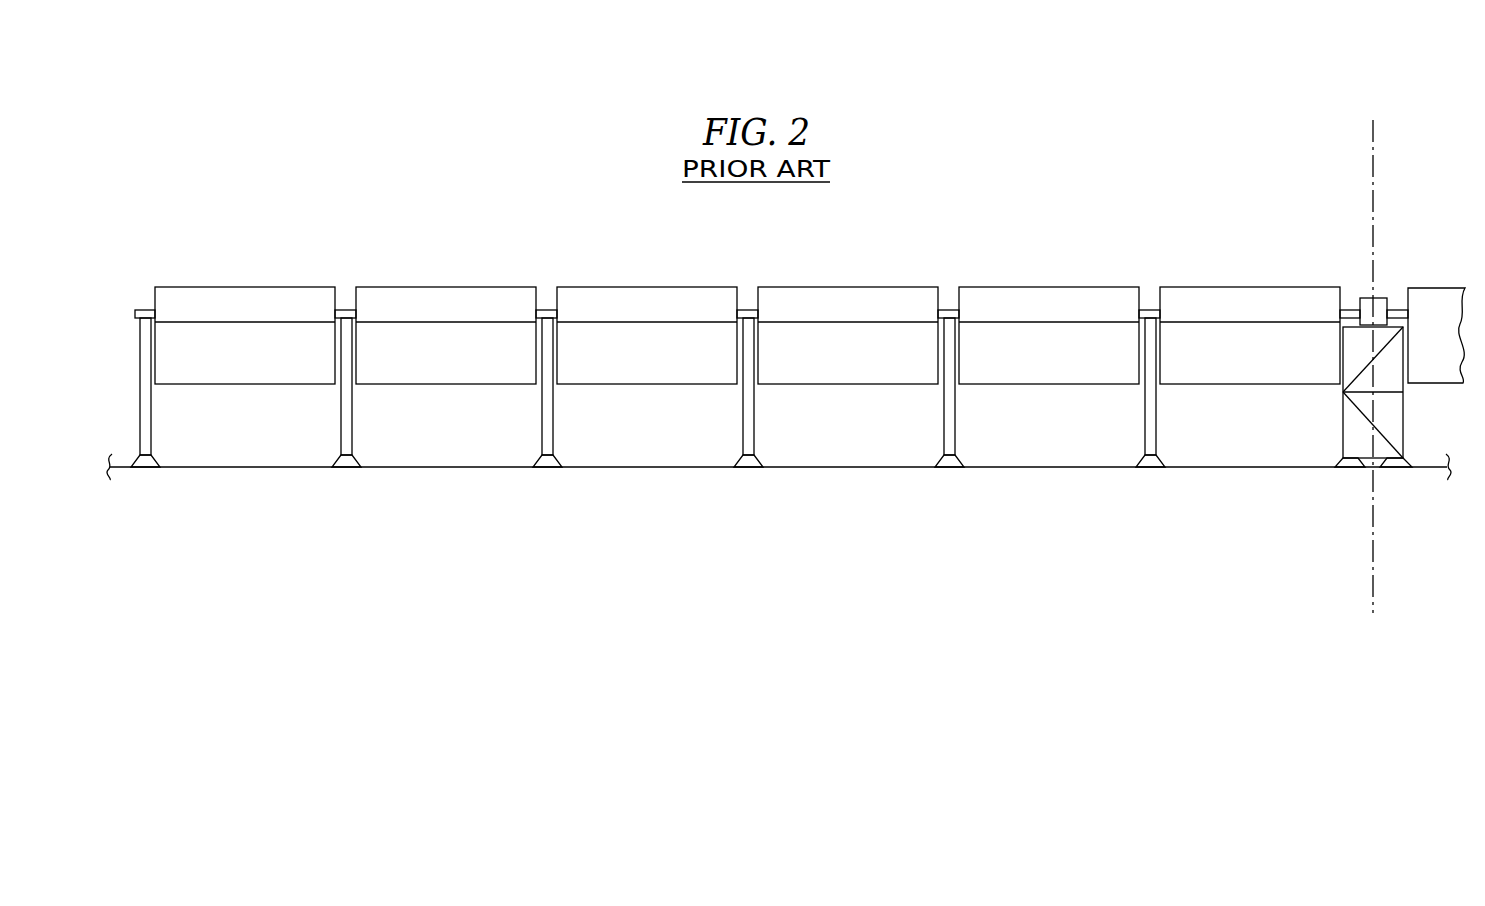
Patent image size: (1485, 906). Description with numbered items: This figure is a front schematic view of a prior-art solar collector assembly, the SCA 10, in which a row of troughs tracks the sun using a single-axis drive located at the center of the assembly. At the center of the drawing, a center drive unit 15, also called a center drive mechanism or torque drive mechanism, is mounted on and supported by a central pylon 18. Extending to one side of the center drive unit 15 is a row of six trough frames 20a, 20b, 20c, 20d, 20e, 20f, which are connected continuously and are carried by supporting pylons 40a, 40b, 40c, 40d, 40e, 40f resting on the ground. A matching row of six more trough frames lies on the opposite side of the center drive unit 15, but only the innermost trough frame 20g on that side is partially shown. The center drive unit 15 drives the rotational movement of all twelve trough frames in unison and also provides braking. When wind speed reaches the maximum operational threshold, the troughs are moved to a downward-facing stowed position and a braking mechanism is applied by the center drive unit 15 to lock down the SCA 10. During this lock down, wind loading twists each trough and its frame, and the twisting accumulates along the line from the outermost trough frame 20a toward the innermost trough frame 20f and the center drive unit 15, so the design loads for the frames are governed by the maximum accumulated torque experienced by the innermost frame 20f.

The SCA 10 is at (1395, 105).
The center drive unit 15 is at (1368, 298).
The central pylon 18 is at (1375, 469).
The trough frame 20a is at (245, 287).
The trough frame 20b is at (446, 287).
The trough frame 20c is at (647, 287).
The trough frame 20d is at (848, 287).
The trough frame 20e is at (1049, 287).
The trough frame 20f is at (1250, 287).
The trough frame 20g is at (1427, 288).
The supporting pylon 40a is at (146, 469).
The supporting pylon 40b is at (347, 469).
The supporting pylon 40c is at (548, 469).
The supporting pylon 40d is at (749, 469).
The supporting pylon 40e is at (950, 469).
The supporting pylon 40f is at (1151, 469).